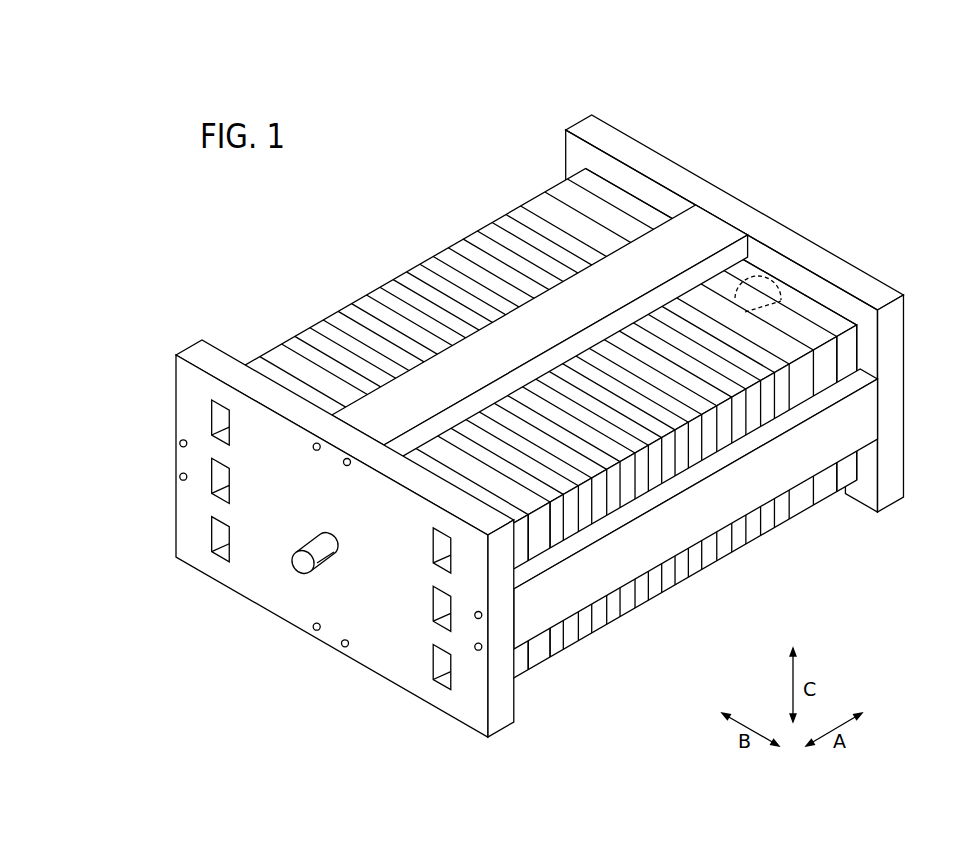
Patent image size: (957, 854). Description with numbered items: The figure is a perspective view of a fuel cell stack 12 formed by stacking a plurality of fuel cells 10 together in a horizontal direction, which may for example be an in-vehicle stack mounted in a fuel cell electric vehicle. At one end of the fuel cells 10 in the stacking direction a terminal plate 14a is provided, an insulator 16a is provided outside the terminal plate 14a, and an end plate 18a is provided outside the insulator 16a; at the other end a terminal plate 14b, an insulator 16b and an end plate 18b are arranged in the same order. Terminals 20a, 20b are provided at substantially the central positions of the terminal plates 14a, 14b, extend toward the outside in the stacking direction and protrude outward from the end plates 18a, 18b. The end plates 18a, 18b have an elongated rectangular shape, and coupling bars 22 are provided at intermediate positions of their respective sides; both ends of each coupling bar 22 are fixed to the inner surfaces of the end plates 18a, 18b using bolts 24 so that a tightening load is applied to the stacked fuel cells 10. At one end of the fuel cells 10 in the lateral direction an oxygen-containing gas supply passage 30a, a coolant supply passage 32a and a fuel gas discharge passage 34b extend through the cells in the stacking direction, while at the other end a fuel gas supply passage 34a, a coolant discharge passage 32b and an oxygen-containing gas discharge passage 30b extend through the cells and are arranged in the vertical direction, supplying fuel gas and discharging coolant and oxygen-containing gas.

The fuel cell 10 is at (337, 303).
The fuel cell stack 12 is at (383, 173).
The terminal plate 14a is at (537, 657).
The terminal plate 14b is at (823, 492).
The insulator 16a is at (523, 667).
The insulator 16b is at (848, 478).
The end plate 18a is at (188, 334).
The end plate 18b is at (894, 281).
The terminal 20a is at (303, 564).
The terminal 20b is at (778, 298).
The coupling bar 22 is at (717, 228).
The bolt 24 is at (348, 468).
The oxygen-containing gas supply passage 30a is at (217, 417).
The oxygen-containing gas discharge passage 30b is at (447, 683).
The coolant supply passage 32a is at (217, 466).
The coolant discharge passage 32b is at (437, 613).
The fuel gas supply passage 34a is at (453, 547).
The fuel gas discharge passage 34b is at (217, 538).